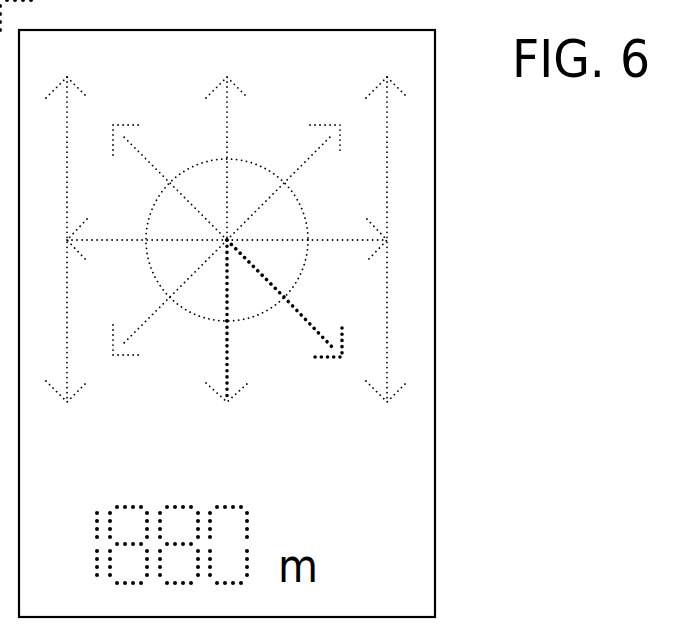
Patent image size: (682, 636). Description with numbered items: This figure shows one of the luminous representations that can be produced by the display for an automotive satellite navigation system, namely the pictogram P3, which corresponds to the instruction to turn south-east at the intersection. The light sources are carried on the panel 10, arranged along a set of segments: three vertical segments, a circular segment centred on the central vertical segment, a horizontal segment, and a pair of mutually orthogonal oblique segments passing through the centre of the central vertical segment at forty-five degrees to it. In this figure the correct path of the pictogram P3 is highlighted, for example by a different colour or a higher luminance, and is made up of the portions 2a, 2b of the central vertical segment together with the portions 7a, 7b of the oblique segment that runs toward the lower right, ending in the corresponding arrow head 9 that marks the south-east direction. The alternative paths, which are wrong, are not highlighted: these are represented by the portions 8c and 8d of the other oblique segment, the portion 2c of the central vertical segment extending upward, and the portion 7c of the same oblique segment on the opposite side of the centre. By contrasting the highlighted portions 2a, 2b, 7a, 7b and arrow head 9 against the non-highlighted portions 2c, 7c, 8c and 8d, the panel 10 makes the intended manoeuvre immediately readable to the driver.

The panel 10 is at (476, 346).
The portion of the central vertical segment 2a is at (232, 346).
The portion of the central vertical segment 2b is at (231, 277).
The portion of the central vertical segment 2c is at (223, 182).
The portion of the oblique segment 7a is at (294, 311).
The portion of the oblique segment 7b is at (258, 273).
The portion of the oblique segment 7c is at (195, 211).
The portion of the oblique segment 8c is at (265, 197).
The portion of the oblique segment 8d is at (187, 281).
The arrow head 9 is at (344, 349).
The pictogram P3 is at (292, 328).